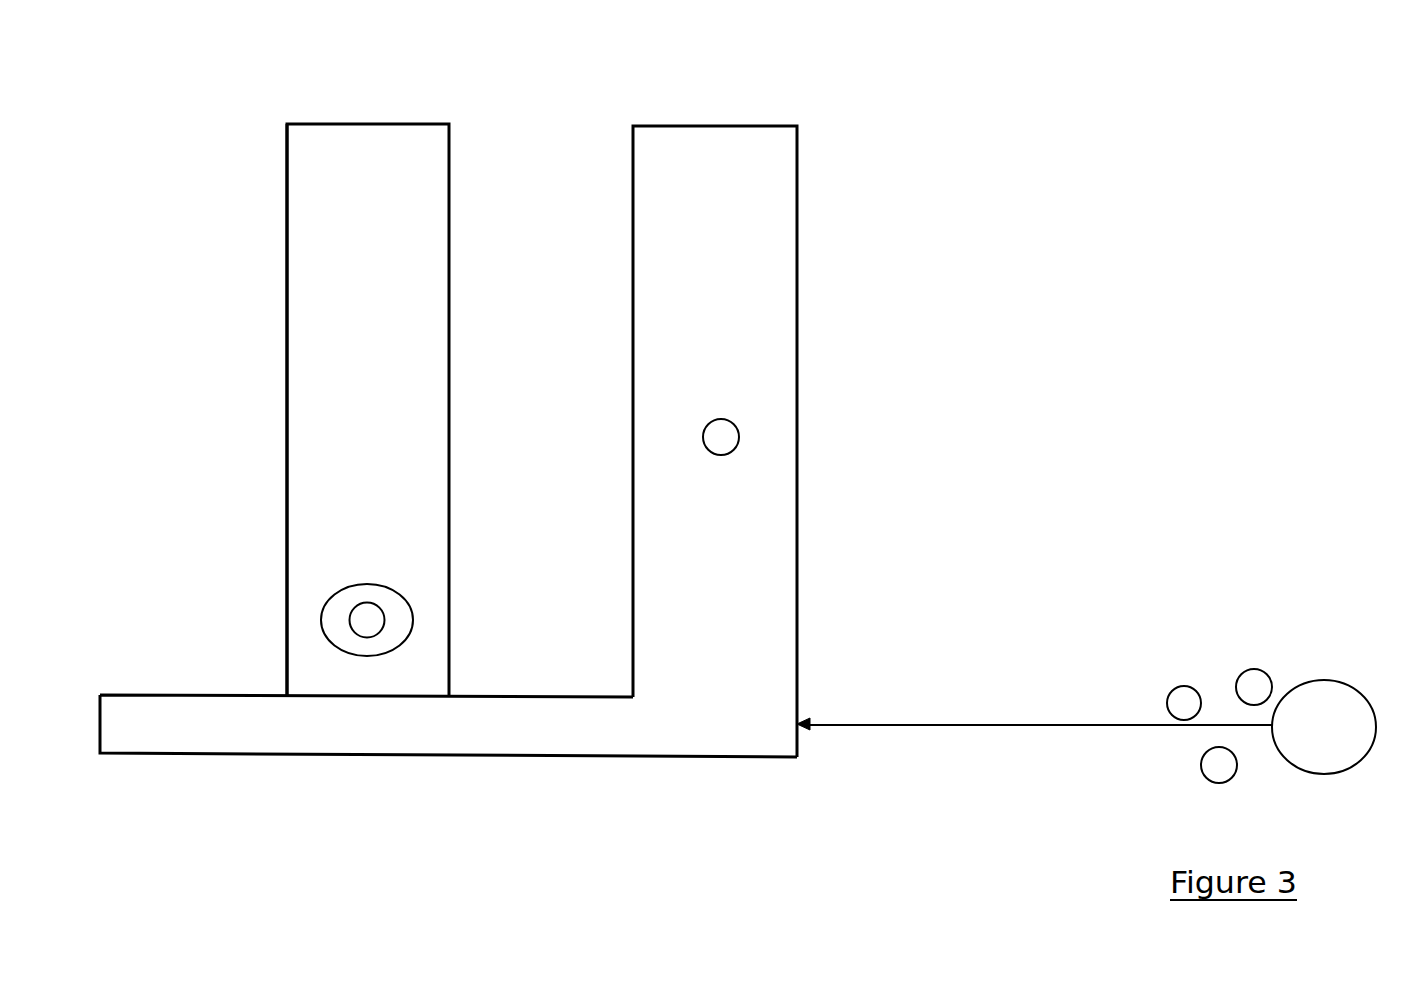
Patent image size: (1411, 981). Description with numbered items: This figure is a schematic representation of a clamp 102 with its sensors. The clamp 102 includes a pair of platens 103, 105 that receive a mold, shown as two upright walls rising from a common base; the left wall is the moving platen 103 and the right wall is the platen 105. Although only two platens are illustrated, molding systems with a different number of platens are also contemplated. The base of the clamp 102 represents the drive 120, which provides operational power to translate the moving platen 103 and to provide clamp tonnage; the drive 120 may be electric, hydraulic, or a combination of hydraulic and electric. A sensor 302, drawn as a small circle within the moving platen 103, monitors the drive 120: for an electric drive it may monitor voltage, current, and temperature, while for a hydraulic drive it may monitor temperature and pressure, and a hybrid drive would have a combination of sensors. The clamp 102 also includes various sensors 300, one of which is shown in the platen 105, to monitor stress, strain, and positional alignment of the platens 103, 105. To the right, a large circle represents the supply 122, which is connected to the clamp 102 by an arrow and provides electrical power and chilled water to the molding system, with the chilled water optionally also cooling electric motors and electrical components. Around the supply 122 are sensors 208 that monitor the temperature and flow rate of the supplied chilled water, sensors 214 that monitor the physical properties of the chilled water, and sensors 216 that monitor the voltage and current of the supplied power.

The clamp 102 is at (287, 124).
The moving platen 103 is at (286, 263).
The platen 105 is at (798, 126).
The drive 120 is at (367, 662).
The supply 122 is at (1298, 763).
The sensors 208 is at (1249, 668).
The sensors 214 is at (1177, 687).
The sensors 216 is at (1202, 772).
The sensors 300 is at (738, 430).
The sensor 302 is at (353, 615).